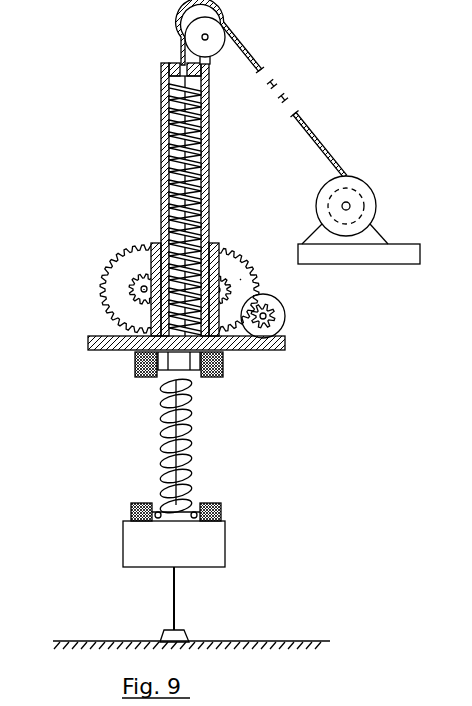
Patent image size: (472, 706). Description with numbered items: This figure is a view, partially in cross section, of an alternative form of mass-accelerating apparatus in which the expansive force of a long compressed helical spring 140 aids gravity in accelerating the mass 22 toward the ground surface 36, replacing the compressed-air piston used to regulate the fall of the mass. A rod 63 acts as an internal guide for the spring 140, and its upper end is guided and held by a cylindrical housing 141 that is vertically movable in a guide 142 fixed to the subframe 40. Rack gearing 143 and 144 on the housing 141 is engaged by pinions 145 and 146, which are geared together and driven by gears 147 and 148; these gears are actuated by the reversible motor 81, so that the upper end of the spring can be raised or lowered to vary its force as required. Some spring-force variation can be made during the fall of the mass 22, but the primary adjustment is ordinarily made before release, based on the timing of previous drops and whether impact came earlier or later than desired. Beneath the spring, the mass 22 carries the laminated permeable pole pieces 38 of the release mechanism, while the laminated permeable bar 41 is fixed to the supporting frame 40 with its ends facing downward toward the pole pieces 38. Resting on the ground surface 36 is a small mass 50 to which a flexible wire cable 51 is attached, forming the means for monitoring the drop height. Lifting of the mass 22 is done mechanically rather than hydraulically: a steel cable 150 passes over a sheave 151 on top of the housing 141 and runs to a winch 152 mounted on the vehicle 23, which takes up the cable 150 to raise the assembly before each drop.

The sheave 151 is at (214, 32).
The steel cable 150 is at (160, 140).
The winch 152 is at (360, 190).
The vehicle 23 is at (392, 248).
The cylindrical housing 141 is at (160, 190).
The rack gearing 143 is at (219, 248).
The guide 142 is at (226, 262).
The rack gearing 144 is at (128, 252).
The pinion 146 is at (130, 288).
The gear 148 is at (122, 300).
The gear 147 is at (240, 279).
The pinion 145 is at (230, 291).
The reversible motor 81 is at (272, 318).
The subframe 40 is at (88, 343).
The laminated permeable bar 41 is at (228, 366).
The compressed helical spring 140 is at (192, 421).
The rod 63 is at (160, 449).
The pole pieces 38 is at (222, 512).
The mass 22 is at (216, 548).
The flexible wire cable 51 is at (176, 590).
The small mass 50 is at (186, 628).
The ground surface 36 is at (240, 640).